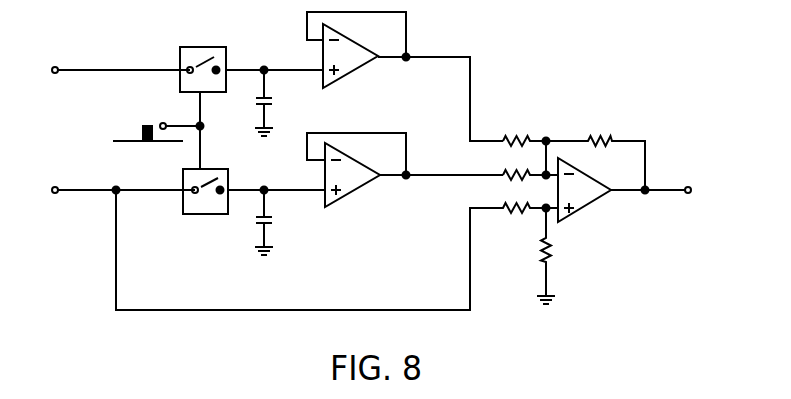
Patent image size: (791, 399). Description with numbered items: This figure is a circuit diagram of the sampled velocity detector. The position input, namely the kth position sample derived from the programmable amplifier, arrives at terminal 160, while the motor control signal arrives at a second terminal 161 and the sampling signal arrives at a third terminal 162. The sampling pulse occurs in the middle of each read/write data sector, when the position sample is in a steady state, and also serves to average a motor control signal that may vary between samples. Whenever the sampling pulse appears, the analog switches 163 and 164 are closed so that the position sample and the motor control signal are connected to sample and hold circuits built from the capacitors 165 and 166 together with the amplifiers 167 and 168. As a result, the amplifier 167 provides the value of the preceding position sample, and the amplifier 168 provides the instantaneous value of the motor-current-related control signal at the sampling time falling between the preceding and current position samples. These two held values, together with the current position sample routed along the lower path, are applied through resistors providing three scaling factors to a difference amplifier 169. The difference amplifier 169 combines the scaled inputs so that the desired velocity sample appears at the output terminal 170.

The terminal 160 is at (56, 194).
The terminal 161 is at (56, 74).
The terminal 162 is at (164, 123).
The analog switch 163 is at (208, 214).
The analog switch 164 is at (204, 47).
The capacitor 165 is at (272, 219).
The capacitor 166 is at (272, 100).
The amplifier 167 is at (352, 194).
The amplifier 168 is at (350, 74).
The difference amplifier 169 is at (582, 208).
The output terminal 170 is at (687, 194).